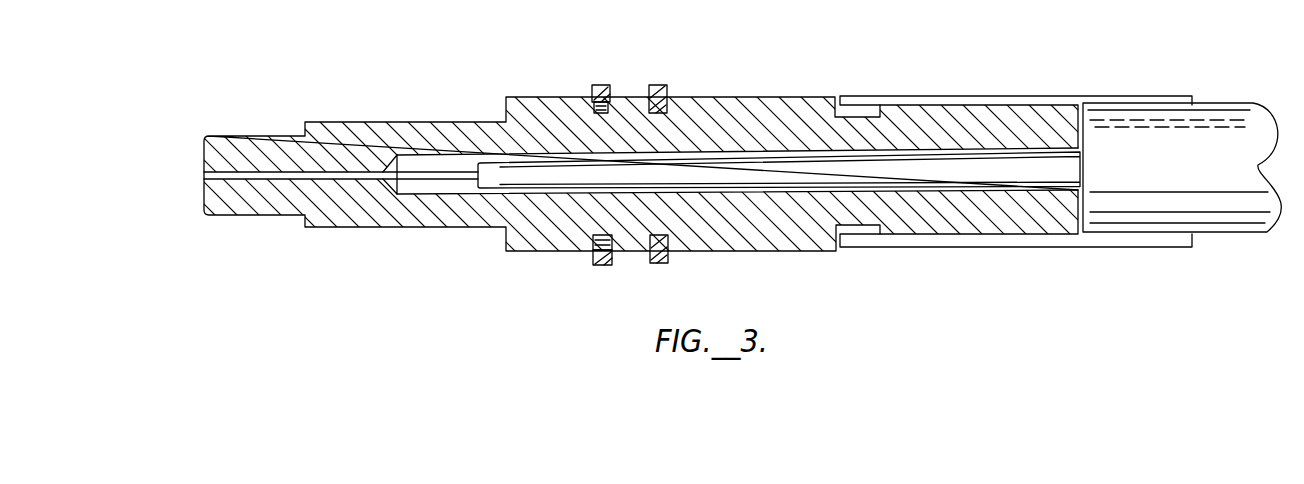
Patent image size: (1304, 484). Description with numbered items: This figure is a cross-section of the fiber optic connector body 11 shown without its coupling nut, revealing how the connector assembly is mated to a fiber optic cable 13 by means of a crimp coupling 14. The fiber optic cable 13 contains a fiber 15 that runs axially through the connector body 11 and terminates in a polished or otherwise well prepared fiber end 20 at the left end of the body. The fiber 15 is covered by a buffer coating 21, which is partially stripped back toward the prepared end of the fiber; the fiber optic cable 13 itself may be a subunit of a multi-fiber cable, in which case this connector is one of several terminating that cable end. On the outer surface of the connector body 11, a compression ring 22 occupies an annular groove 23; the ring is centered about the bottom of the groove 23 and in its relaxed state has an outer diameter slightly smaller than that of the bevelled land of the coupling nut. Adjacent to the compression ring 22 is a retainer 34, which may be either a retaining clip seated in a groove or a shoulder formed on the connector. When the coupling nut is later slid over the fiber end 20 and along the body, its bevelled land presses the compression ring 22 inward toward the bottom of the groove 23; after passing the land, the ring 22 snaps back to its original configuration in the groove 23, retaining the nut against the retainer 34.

The fiber optic connector body 11 is at (514, 97).
The fiber optic cable 13 is at (1228, 103).
The crimp coupling 14 is at (1006, 95).
The fiber 15 is at (355, 175).
The fiber end 20 is at (204, 172).
The buffer coating 21 is at (733, 170).
The compression ring 22 is at (601, 85).
The annular groove 23 is at (612, 110).
The retainer 34 is at (657, 85).